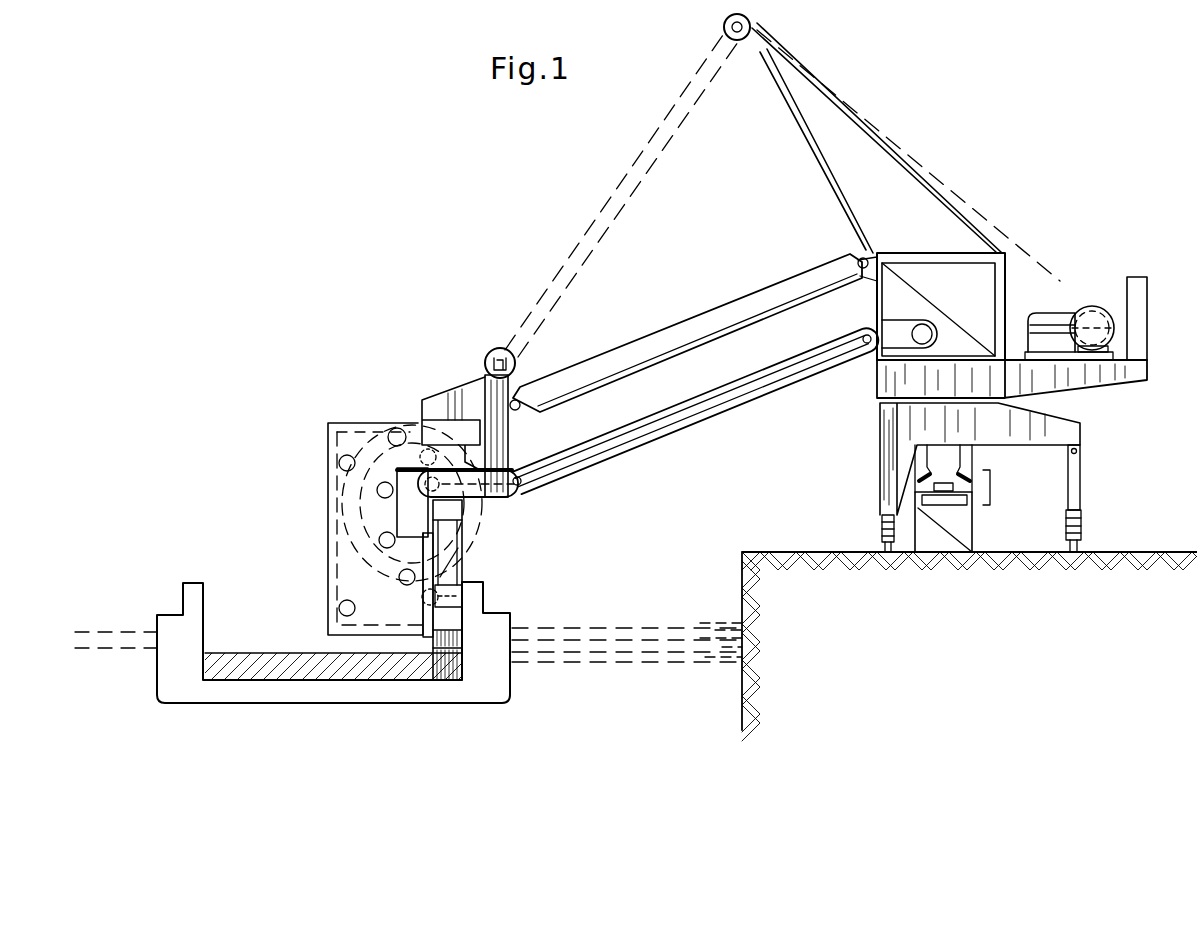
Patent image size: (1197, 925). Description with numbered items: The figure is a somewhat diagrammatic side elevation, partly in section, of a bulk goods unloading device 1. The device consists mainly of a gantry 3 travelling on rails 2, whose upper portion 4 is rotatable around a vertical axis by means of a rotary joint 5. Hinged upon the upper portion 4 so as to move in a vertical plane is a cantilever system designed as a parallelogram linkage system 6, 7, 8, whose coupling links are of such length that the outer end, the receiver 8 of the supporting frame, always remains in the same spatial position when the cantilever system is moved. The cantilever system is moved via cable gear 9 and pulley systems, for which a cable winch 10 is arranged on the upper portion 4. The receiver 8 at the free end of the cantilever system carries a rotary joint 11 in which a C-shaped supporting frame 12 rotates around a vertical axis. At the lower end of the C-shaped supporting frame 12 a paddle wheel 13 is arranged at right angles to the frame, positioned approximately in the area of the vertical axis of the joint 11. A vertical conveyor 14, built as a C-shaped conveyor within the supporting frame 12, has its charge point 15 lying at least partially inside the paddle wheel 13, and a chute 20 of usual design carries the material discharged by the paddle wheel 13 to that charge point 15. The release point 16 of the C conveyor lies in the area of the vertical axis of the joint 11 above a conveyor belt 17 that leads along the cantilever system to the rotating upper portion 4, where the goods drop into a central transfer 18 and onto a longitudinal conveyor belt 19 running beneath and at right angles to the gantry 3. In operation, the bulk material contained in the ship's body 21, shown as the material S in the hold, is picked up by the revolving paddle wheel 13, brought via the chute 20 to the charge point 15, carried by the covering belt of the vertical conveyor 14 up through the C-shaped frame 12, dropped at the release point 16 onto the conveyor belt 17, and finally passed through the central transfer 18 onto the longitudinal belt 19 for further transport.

The bulk goods unloading device 1 is at (951, 116).
The rails 2 is at (1080, 542).
The gantry 3 is at (1063, 428).
The upper portion 4 is at (995, 370).
The rotary joint 5 is at (900, 403).
The parallelogram linkage system 6 is at (665, 342).
The parallelogram linkage system 7 is at (692, 408).
The receiver 8 is at (475, 405).
The cable gear 9 is at (610, 190).
The cable winch 10 is at (1057, 335).
The rotary joint 11 is at (443, 430).
The C-shaped supporting frame 12 is at (340, 430).
The paddle wheel 13 is at (453, 552).
The vertical conveyor 14 is at (335, 508).
The charge point 15 is at (437, 587).
The release point 16 is at (453, 457).
The conveyor belt 17 is at (590, 437).
The central transfer 18 is at (942, 335).
The longitudinal conveyor belt 19 is at (968, 500).
The chute 20 is at (460, 558).
The ship's body 21 is at (180, 630).
The sediment S is at (262, 662).